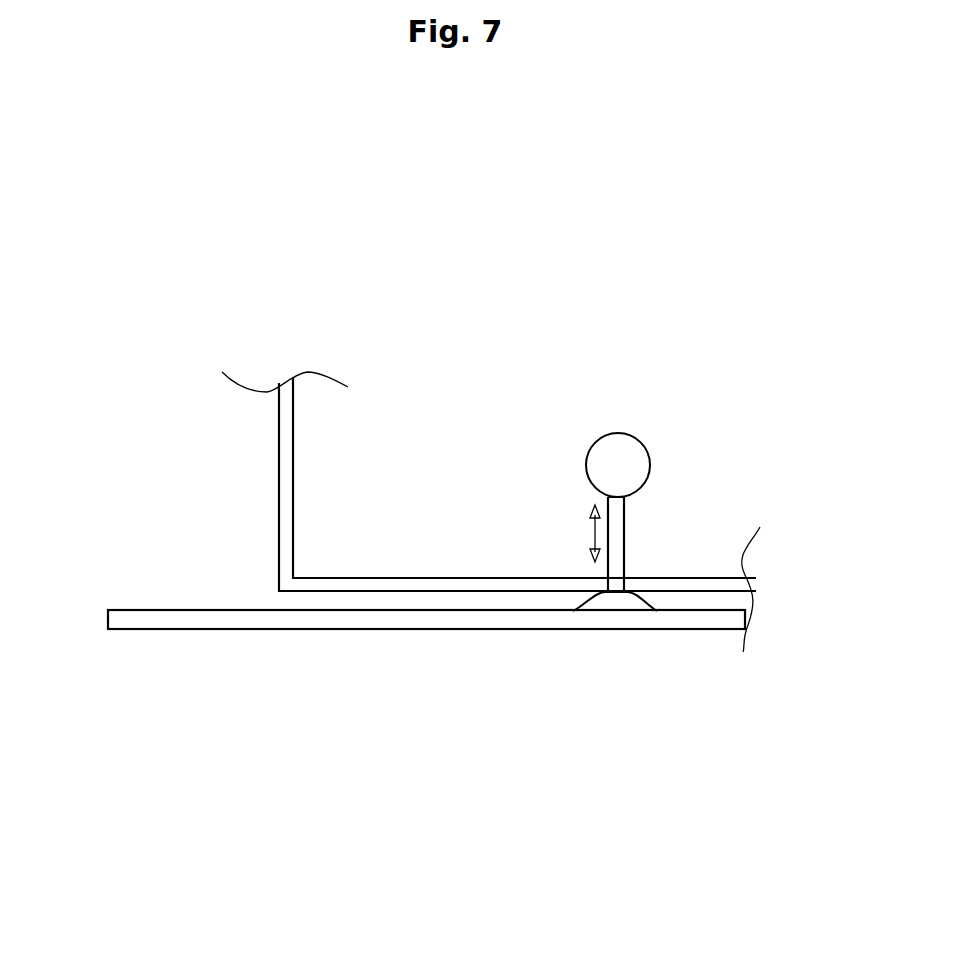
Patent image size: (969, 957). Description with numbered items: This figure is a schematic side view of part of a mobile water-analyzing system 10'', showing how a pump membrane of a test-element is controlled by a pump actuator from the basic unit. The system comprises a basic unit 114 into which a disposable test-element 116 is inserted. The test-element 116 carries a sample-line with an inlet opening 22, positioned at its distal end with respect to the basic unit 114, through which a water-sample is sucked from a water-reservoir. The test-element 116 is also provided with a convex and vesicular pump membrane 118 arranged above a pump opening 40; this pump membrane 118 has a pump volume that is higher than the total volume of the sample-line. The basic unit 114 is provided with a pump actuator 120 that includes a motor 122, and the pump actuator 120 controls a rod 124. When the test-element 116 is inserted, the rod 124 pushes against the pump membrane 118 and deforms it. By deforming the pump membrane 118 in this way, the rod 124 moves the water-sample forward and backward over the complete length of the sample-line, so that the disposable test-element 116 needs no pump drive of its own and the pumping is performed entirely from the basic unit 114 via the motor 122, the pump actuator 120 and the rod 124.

The mobile water-analyzing system 10'' is at (710, 206).
The inlet opening 22 is at (88, 618).
The pump opening 40 is at (613, 605).
The basic unit 114 is at (260, 523).
The disposable test-element 116 is at (405, 653).
The pump membrane 118 is at (640, 602).
The pump actuator 120 is at (548, 527).
The motor 122 is at (628, 437).
The rod 124 is at (622, 578).